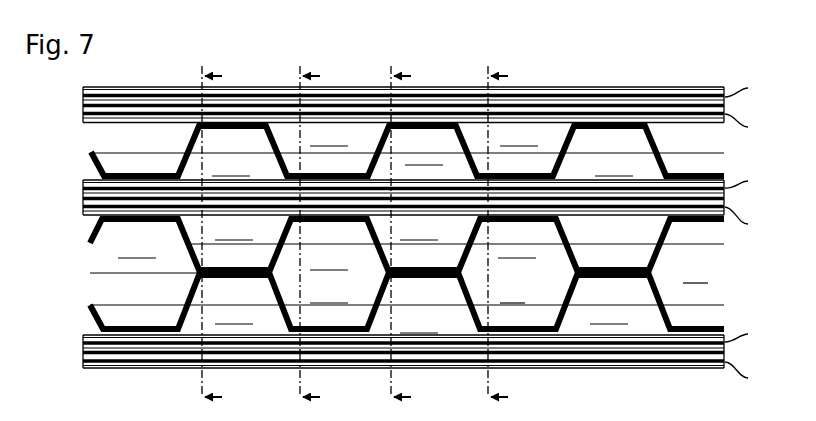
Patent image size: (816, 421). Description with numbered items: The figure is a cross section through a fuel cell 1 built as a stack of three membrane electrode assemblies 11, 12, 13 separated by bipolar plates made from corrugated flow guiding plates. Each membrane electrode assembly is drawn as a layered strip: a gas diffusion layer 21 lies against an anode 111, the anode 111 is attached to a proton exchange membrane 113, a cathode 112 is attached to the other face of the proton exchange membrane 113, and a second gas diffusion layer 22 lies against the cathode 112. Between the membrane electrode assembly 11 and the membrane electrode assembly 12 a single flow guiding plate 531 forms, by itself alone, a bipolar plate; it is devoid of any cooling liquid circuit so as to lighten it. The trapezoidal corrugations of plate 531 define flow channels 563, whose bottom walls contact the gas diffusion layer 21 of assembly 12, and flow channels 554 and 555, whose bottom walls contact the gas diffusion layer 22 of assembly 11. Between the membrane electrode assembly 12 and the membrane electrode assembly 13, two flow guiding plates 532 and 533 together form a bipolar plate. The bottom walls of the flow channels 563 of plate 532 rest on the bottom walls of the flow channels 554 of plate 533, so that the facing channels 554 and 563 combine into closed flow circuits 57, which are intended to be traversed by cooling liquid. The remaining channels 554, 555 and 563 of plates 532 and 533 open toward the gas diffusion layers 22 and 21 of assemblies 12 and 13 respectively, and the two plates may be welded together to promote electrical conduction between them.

The laminated structure 1 is at (341, 58).
The membrane electrode assembly 11 is at (532, 78).
The membrane electrode assembly 12 is at (80, 202).
The membrane electrode assembly 13 is at (80, 354).
The gas diffusion layer 21 is at (83, 91).
The gas diffusion layer 22 is at (83, 118).
The proton exchange membrane 113 is at (83, 104).
The anode 111 is at (428, 204).
The cathode 112 is at (428, 256).
The flow guiding plate 531 is at (80, 157).
The flow guiding plate 532 is at (80, 245).
The flow guiding plate 533 is at (80, 309).
The flow channels 554 is at (422, 244).
The channel 555 is at (373, 234).
The flow channels 563 is at (376, 214).
The flow circuit 57 is at (604, 283).